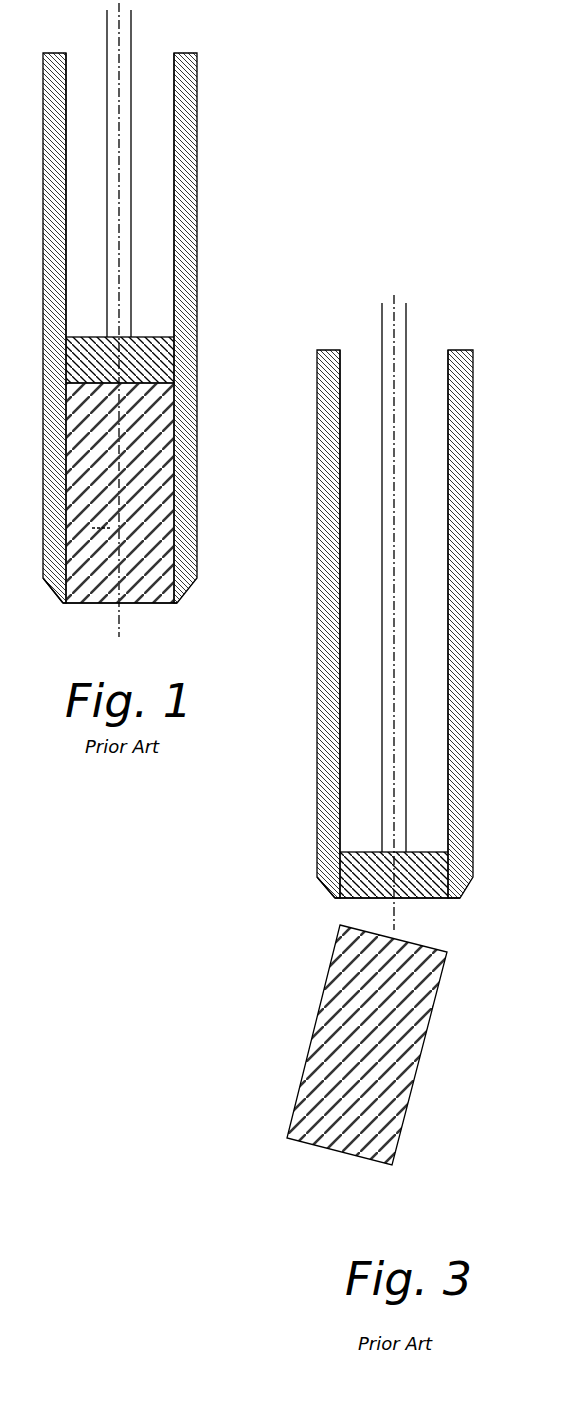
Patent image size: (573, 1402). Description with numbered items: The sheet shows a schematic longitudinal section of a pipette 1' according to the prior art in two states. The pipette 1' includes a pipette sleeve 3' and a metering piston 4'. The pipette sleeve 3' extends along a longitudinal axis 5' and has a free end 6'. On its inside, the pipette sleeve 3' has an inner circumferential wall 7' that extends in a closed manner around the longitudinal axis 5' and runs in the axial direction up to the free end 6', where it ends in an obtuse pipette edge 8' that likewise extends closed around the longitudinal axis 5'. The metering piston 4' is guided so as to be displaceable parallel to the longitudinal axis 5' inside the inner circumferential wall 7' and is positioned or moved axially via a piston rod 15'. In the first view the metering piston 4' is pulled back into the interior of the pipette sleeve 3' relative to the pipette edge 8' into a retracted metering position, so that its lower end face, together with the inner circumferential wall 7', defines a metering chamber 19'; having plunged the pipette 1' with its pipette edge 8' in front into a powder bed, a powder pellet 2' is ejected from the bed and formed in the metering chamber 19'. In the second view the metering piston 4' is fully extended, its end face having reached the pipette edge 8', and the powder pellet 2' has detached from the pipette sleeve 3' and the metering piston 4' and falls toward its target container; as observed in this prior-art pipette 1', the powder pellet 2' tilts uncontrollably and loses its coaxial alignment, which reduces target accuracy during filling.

In FIG. 1, the pipette 1' is at (181, 336).
In FIG. 3, the pipette 1' is at (412, 659).
In FIG. 1, the powder pellet 2' is at (160, 493).
In FIG. 3, the powder pellet 2' is at (395, 1045).
In FIG. 1, the pipette sleeve 3' is at (141, 328).
In FIG. 3, the pipette sleeve 3' is at (415, 624).
In FIG. 1, the metering piston 4' is at (163, 356).
In FIG. 3, the metering piston 4' is at (437, 871).
In FIG. 1, the longitudinal axis 5' is at (172, 173).
In FIG. 3, the longitudinal axis 5' is at (445, 577).
In FIG. 1, the free end 6' is at (145, 636).
In FIG. 3, the free end 6' is at (419, 928).
In FIG. 1, the inner circumferential wall 7' is at (151, 259).
In FIG. 3, the inner circumferential wall 7' is at (425, 601).
In FIG. 1, the pipette edge 8' is at (43, 624).
In FIG. 3, the pipette edge 8' is at (316, 918).
In FIG. 1, the piston rod 15' is at (192, 320).
In FIG. 3, the piston rod 15' is at (465, 612).
In FIG. 1, the metering chamber 19' is at (98, 518).